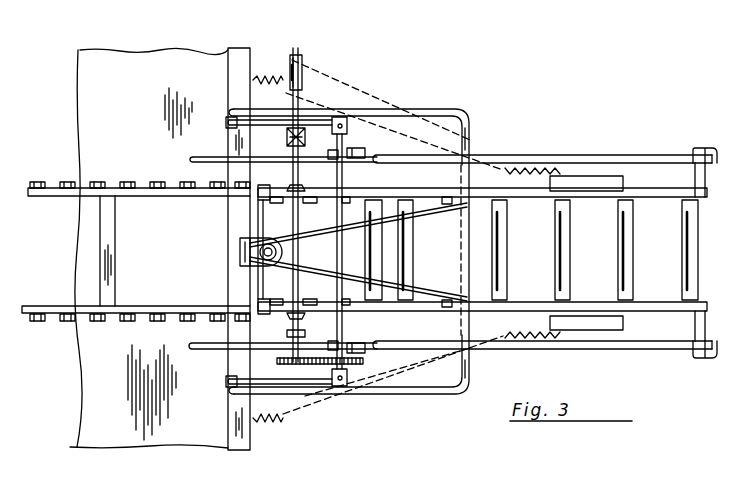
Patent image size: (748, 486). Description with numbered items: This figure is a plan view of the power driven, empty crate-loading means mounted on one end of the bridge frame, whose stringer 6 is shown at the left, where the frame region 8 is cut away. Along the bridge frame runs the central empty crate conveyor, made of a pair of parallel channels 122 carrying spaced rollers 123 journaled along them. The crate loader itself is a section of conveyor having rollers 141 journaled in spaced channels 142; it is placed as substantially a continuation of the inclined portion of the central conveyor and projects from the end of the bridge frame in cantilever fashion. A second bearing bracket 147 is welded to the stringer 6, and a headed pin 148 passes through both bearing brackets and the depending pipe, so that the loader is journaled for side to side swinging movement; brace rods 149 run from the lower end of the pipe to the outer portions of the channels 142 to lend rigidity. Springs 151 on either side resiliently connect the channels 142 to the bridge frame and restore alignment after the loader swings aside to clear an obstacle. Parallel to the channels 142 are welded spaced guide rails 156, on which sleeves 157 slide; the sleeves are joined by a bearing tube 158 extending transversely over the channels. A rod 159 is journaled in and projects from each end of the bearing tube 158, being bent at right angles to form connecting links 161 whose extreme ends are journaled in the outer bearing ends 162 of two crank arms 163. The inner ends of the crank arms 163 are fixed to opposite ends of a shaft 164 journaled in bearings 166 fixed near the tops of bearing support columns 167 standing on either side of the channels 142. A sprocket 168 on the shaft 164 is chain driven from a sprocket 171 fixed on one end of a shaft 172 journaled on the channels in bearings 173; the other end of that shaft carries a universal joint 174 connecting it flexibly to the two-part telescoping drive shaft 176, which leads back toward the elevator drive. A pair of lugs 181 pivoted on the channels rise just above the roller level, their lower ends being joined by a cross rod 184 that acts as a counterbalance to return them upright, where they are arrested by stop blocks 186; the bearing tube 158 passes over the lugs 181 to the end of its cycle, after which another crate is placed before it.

The stringer 6 is at (241, 48).
The foundation wall 8 is at (108, 377).
The parallel channels 122 is at (52, 197).
The spaced rollers 123 is at (121, 183).
The rollers 141 is at (405, 260).
The spaced channels 142 is at (598, 197).
The second bearing bracket 147 is at (258, 258).
The headed pin 148 is at (253, 251).
The brace rods 149 is at (357, 228).
The springs 151 is at (266, 85).
The guide rails 156 is at (563, 157).
The sleeves 157 is at (395, 163).
The bearing tube 158 is at (463, 341).
The rod 159 is at (469, 126).
The connecting links 161 is at (418, 110).
The outer bearing ends 162 is at (232, 125).
The crank arms 163 is at (270, 121).
The shaft 164 is at (346, 128).
The bearings 166 is at (328, 153).
The bearing support columns 167 is at (366, 153).
The sprocket 168 is at (331, 368).
The sprocket 171 is at (285, 362).
The shaft 172 is at (296, 336).
The bearings 173 is at (291, 186).
The universal joint 174 is at (288, 141).
The drive shaft 176 is at (303, 80).
The lugs 181 is at (448, 308).
The cross rod 184 is at (456, 227).
The stop blocks 186 is at (447, 197).